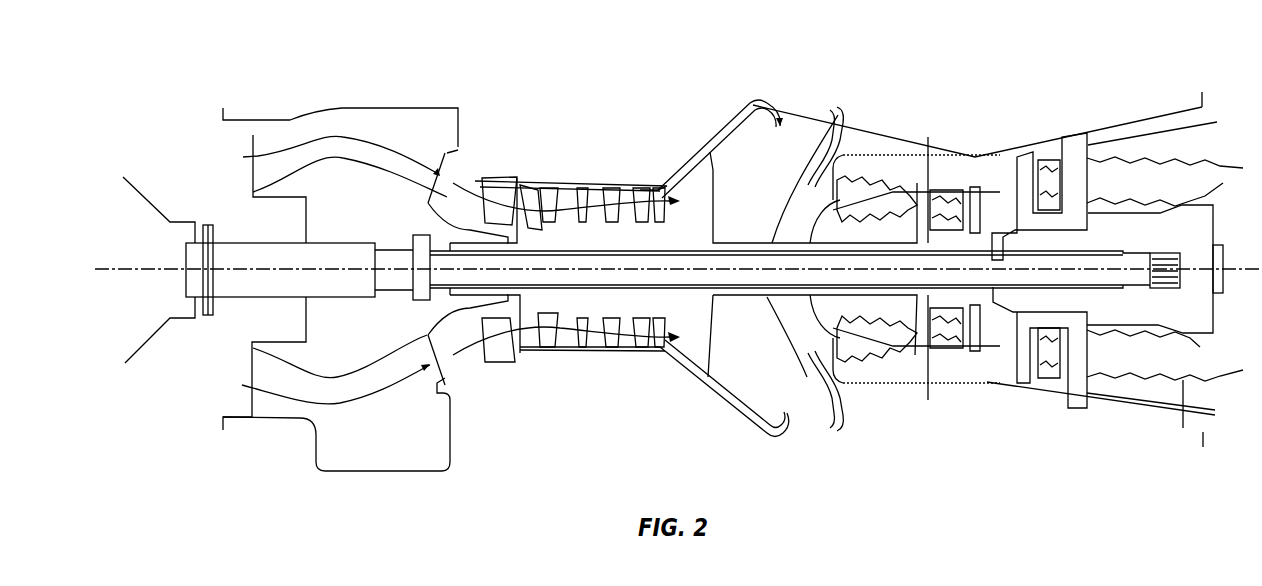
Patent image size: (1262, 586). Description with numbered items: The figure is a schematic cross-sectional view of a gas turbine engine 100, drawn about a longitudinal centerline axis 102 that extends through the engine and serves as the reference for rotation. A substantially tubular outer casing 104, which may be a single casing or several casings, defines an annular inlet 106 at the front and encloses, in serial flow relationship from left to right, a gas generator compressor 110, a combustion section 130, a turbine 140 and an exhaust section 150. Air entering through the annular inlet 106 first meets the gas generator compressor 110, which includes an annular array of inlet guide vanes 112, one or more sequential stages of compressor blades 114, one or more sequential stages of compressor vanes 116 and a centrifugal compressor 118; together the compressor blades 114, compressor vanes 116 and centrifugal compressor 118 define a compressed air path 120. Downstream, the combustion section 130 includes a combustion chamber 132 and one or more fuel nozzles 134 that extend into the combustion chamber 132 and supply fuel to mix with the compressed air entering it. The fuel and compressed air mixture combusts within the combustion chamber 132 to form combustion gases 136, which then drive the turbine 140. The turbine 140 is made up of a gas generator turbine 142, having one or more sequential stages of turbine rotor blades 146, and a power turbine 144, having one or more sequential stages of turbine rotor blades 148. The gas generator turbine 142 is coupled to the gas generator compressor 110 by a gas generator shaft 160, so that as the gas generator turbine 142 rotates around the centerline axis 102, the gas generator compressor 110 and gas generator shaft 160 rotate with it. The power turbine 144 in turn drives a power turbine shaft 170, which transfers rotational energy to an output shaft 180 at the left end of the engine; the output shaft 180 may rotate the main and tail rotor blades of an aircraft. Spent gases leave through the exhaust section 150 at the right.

The gas turbine engine 100 is at (250, 463).
The centerline axis 102 is at (150, 269).
The outer casing 104 is at (538, 176).
The annular inlet 106 is at (256, 137).
The gas generator compressor 110 is at (549, 362).
The inlet guide vanes 112 is at (503, 362).
The compressor blades 114 is at (532, 193).
The compressor vanes 116 is at (585, 347).
The centrifugal compressor 118 is at (683, 357).
The compressed air path 120 is at (470, 215).
The combustion section 130 is at (807, 385).
The combustion chamber 132 is at (861, 168).
The fuel nozzles 134 is at (822, 160).
The combustion gases 136 is at (868, 345).
The turbine 140 is at (1038, 390).
The gas generator turbine 142 is at (982, 337).
The power turbine 144 is at (1090, 159).
The turbine rotor blades 146 is at (935, 192).
The turbine rotor blades 148 is at (1025, 150).
The exhaust section 150 is at (1175, 432).
The gas generator shaft 160 is at (737, 240).
The power turbine shaft 170 is at (1093, 283).
The output shaft 180 is at (222, 250).